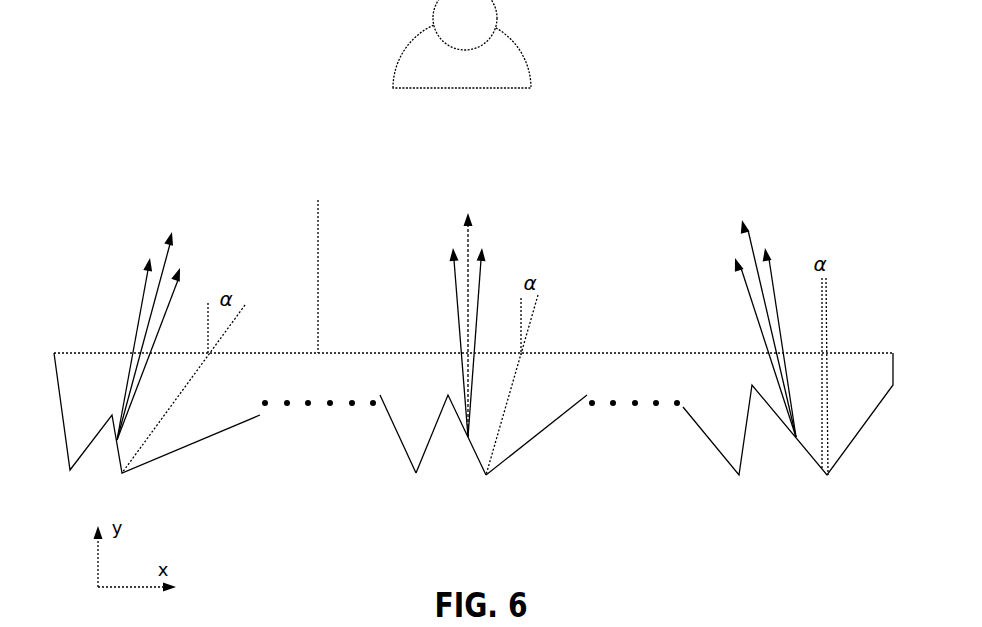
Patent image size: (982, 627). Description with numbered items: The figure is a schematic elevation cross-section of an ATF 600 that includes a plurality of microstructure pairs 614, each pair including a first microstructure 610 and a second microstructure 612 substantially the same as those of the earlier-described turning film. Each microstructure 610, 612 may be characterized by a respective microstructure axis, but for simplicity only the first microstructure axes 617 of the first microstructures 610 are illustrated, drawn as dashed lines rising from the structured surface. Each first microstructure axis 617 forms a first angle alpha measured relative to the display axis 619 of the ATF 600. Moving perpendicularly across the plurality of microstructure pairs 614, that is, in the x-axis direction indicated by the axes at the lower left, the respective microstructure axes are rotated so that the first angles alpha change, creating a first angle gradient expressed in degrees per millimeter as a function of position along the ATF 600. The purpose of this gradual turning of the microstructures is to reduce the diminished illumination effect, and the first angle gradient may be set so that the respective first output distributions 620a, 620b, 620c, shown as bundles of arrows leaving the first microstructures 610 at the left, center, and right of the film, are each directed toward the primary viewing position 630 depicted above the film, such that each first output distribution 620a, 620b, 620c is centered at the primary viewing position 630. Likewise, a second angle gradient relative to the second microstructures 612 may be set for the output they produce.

The ATF 600 is at (461, 418).
The first microstructure 610 is at (550, 436).
The second microstructure 612 is at (415, 428).
The microstructure pair 614 is at (471, 470).
The first microstructure axis 617 is at (493, 447).
The display axis 619 is at (318, 292).
The first output distribution 620a is at (148, 237).
The first output distribution 620b is at (442, 219).
The first output distribution 620c is at (767, 219).
The primary viewing position 630 is at (422, 29).